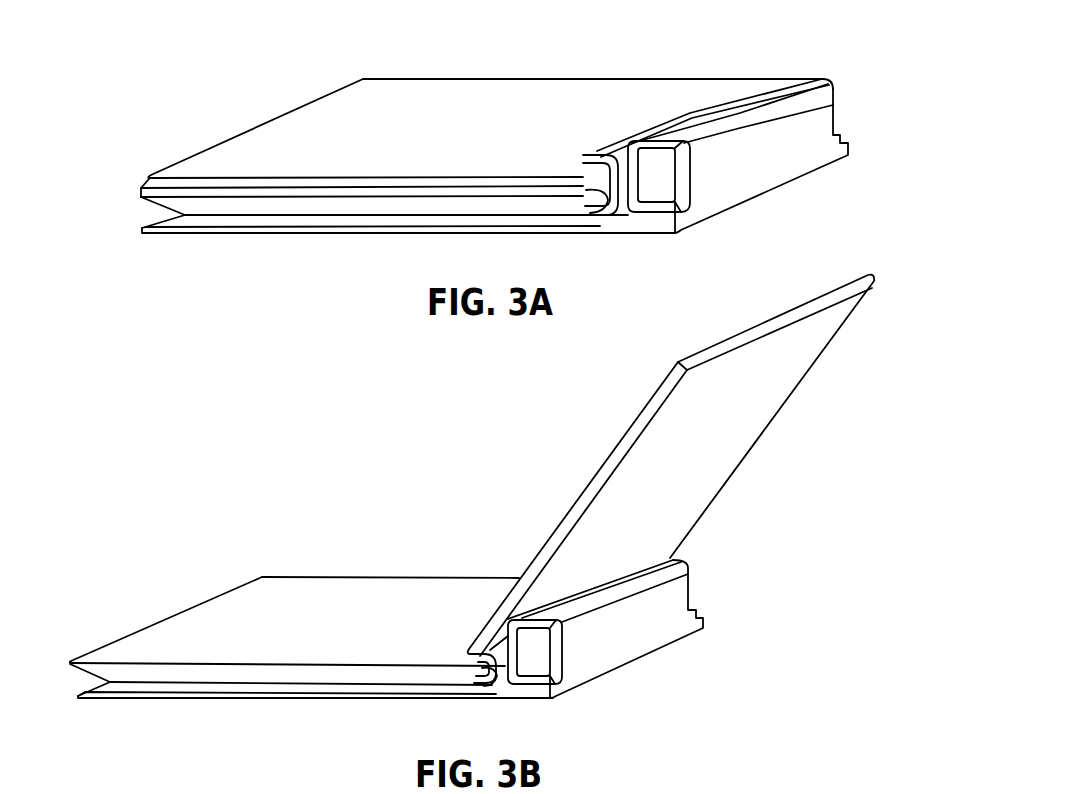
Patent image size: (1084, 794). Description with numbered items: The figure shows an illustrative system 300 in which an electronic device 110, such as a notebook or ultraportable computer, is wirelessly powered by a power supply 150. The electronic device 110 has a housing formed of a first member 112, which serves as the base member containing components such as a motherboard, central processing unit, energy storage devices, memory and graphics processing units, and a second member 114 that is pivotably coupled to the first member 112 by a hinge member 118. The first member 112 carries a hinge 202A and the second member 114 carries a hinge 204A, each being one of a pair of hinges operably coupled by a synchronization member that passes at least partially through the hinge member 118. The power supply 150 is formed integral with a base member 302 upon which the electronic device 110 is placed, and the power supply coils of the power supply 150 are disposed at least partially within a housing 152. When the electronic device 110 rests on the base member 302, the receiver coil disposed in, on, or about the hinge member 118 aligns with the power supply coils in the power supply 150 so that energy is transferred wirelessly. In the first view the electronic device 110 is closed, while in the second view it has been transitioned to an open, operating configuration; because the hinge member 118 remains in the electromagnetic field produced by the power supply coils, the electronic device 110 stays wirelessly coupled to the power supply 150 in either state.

In FIG. 3A, the system 300 is at (849, 20).
In FIG. 3B, the system 300 is at (187, 352).
In FIG. 3A, the electronic device 110 is at (559, 63).
In FIG. 3B, the electronic device 110 is at (404, 565).
In FIG. 3A, the first member 112 is at (318, 205).
In FIG. 3B, the first member 112 is at (243, 672).
In FIG. 3A, the second member 114 is at (448, 134).
In FIG. 3B, the second member 114 is at (695, 474).
In FIG. 3A, the hinge member 118 is at (762, 78).
In FIG. 3B, the hinge member 118 is at (520, 678).
In FIG. 3A, the power supply 150 is at (810, 70).
In FIG. 3B, the power supply 150 is at (696, 579).
In FIG. 3A, the housing 152 is at (773, 158).
In FIG. 3B, the housing 152 is at (622, 632).
In FIG. 3A, the hinge 202A is at (594, 211).
In FIG. 3B, the hinge 202A is at (490, 672).
In FIG. 3A, the hinge 204A is at (578, 160).
In FIG. 3B, the hinge 204A is at (463, 655).
In FIG. 3A, the base member 302 is at (415, 227).
In FIG. 3B, the base member 302 is at (347, 692).